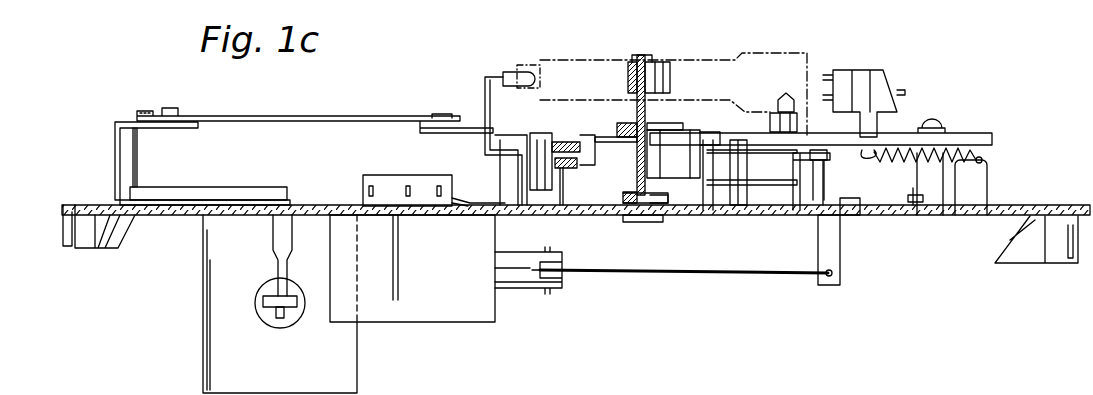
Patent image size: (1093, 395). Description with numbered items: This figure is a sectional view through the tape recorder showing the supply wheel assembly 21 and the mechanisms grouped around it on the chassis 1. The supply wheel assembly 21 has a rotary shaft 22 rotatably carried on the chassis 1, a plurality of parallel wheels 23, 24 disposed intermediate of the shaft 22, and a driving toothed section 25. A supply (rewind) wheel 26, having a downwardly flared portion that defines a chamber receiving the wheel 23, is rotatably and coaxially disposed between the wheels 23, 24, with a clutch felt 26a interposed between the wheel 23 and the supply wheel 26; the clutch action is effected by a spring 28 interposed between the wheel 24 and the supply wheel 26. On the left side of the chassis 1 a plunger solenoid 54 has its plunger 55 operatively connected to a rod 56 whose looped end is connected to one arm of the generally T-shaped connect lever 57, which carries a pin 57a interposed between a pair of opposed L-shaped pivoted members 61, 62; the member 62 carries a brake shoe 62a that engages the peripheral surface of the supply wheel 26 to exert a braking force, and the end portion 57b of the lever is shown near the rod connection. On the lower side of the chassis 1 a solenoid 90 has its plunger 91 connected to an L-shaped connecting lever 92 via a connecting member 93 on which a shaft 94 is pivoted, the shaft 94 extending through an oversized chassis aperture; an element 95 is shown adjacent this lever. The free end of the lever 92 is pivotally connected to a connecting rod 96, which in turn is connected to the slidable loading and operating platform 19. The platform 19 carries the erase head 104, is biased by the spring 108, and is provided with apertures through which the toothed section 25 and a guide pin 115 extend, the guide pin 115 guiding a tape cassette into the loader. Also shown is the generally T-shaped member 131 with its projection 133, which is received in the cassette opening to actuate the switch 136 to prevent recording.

The chassis 1 is at (302, 206).
The slidable loading and operating platform 19 is at (972, 134).
The supply wheel assembly 21 is at (638, 48).
The rotary shaft 22 is at (648, 112).
The wheel 23 is at (626, 224).
The wheel 24 is at (678, 131).
The driving toothed section 25 is at (660, 64).
The supply (rewind) wheel 26 is at (590, 172).
The clutch felt 26a is at (610, 205).
The spring 28 is at (612, 126).
The plunger solenoid 54 is at (478, 324).
The plunger 55 is at (518, 292).
The rod 56 is at (728, 275).
The connect lever 57 is at (802, 216).
The pin 57a is at (806, 150).
The bracket leg 57b is at (832, 287).
The L shaped pivoted member 61 is at (722, 216).
The L shaped pivoted member 62 is at (740, 120).
The brake shoe 62a is at (665, 197).
The solenoid 90 is at (205, 302).
The plunger 91 is at (270, 324).
The L shaped connecting lever 92 is at (113, 132).
The connecting member 93 is at (292, 330).
The shaft 94 is at (272, 243).
The shaft 95 is at (132, 165).
The connecting rod 96 is at (345, 117).
The erase head 104 is at (857, 72).
The spring 108 is at (978, 157).
The guide pin 115 is at (790, 98).
The T shaped member 131 is at (455, 217).
The projection 133 is at (514, 70).
The switch 136 is at (390, 180).